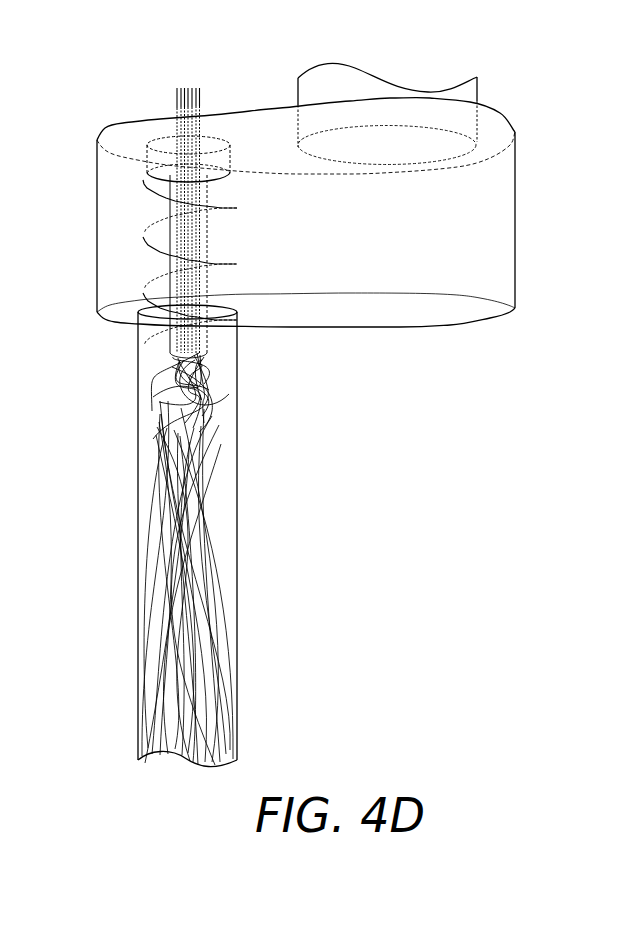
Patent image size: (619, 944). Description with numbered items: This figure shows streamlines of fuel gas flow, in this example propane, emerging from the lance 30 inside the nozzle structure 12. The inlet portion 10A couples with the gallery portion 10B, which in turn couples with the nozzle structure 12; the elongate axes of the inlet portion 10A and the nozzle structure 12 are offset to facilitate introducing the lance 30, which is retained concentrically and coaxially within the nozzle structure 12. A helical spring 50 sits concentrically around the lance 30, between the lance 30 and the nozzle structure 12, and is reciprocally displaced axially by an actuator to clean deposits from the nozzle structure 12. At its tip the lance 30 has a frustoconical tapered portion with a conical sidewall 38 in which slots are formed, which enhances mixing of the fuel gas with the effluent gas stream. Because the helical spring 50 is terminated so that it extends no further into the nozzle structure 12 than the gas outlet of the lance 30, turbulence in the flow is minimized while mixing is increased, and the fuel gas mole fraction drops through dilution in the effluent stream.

The inlet portion 10A is at (478, 86).
The gallery portion 10B is at (515, 218).
The lance 30 is at (176, 100).
The helical spring 50 is at (147, 235).
The conical sidewall 38 is at (160, 363).
The nozzle structure 12 is at (238, 612).